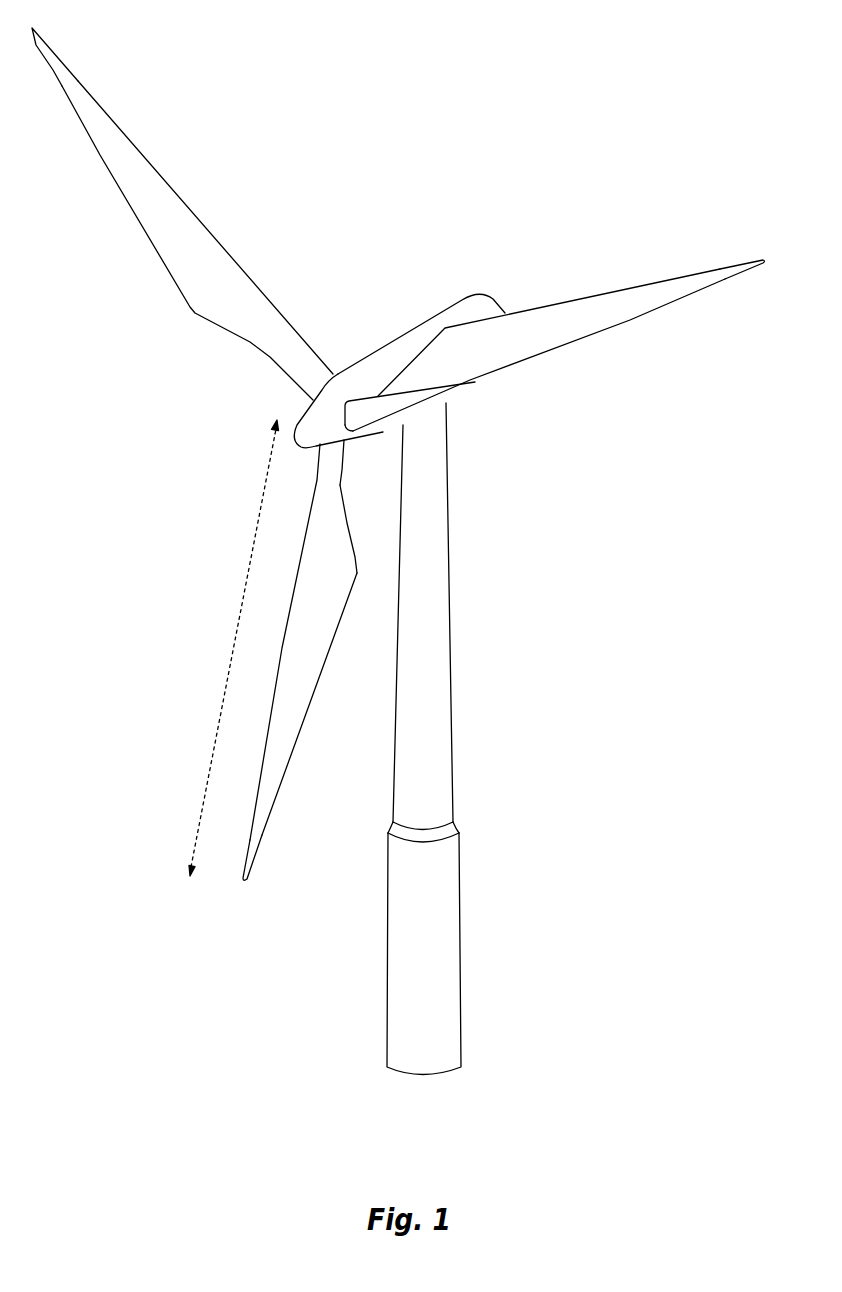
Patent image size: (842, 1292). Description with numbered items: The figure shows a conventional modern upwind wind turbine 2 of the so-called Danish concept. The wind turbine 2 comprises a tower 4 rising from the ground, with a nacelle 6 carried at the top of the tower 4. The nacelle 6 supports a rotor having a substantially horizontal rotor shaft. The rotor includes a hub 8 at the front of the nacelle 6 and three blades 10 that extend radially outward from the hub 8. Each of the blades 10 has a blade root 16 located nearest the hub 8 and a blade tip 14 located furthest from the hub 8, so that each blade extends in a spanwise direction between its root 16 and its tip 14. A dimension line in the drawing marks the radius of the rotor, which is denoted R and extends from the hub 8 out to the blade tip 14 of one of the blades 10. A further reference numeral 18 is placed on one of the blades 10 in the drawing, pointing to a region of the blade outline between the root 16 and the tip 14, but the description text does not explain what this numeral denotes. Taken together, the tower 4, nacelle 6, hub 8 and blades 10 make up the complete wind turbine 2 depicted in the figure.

The wind turbine 2 is at (595, 709).
The tower 4 is at (448, 615).
The nacelle 6 is at (392, 347).
The hub 8 is at (303, 410).
The blades 10 is at (205, 295).
The blade tip 14 is at (77, 82).
The blade root 16 is at (300, 384).
The shoulder 18 is at (332, 474).
The rotor radius R is at (228, 648).